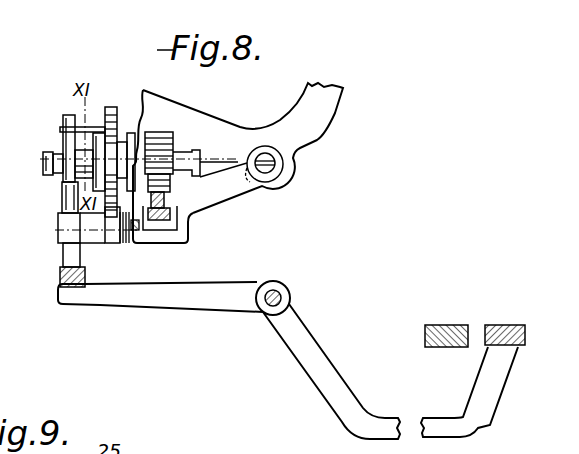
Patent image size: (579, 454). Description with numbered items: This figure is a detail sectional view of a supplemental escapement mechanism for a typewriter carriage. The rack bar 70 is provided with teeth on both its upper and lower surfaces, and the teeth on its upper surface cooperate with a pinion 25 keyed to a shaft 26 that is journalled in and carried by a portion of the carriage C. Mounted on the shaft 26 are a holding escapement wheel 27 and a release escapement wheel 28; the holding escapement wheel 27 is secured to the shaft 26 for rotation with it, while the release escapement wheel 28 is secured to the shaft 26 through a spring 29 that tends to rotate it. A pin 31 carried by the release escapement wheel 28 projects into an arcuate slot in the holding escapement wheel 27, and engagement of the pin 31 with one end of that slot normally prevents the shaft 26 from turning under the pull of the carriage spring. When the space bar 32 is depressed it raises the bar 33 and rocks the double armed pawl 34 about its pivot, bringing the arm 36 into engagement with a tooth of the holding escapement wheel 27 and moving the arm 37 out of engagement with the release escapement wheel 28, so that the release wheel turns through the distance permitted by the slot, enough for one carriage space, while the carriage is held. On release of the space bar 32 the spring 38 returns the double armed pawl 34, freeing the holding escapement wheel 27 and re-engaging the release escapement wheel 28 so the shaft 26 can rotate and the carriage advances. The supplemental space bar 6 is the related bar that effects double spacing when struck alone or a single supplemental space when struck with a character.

The supplemental space bar 6 is at (448, 325).
The pinion 25 is at (166, 142).
The shaft 26 is at (44, 163).
The holding escapement wheel 27 is at (66, 119).
The release escapement wheel 28 is at (117, 112).
The spring 29 is at (83, 140).
The pin 31 is at (93, 126).
The space bar 32 is at (508, 325).
The bar 33 is at (60, 278).
The double armed pawl 34 is at (66, 247).
The arm 36 is at (62, 186).
The arm 37 is at (131, 138).
The spring 38 is at (126, 243).
The rack bar 70 is at (194, 214).
The carriage C is at (240, 184).